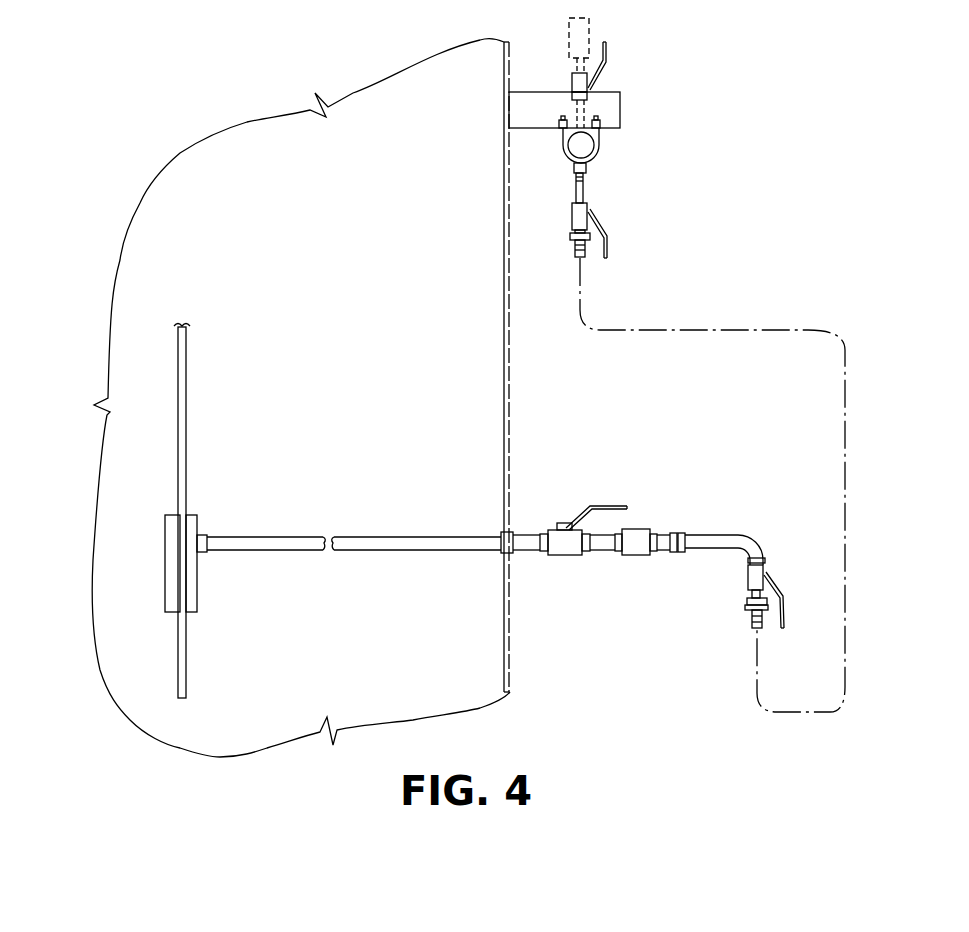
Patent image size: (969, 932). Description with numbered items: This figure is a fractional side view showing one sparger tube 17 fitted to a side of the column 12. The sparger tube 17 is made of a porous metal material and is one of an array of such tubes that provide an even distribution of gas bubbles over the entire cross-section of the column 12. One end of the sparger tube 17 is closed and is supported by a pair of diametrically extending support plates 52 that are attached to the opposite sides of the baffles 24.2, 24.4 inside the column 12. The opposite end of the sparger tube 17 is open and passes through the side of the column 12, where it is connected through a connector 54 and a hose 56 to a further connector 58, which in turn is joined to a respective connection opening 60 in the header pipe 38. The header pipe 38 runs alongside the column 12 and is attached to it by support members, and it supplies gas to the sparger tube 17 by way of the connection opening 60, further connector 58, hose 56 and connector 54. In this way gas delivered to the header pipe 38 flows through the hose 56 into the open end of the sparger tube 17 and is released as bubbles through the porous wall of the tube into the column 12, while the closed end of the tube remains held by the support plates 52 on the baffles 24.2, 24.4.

The column 12 is at (509, 388).
The sparger tube 17 is at (405, 552).
The baffle 24.2 is at (256, 511).
The baffle 24.4 is at (186, 395).
The header pipe 38 is at (582, 147).
The support plate 52 is at (165, 569).
The connector 54 is at (566, 547).
The hose 56 is at (757, 667).
The further connector 58 is at (583, 186).
The connection opening 60 is at (584, 138).